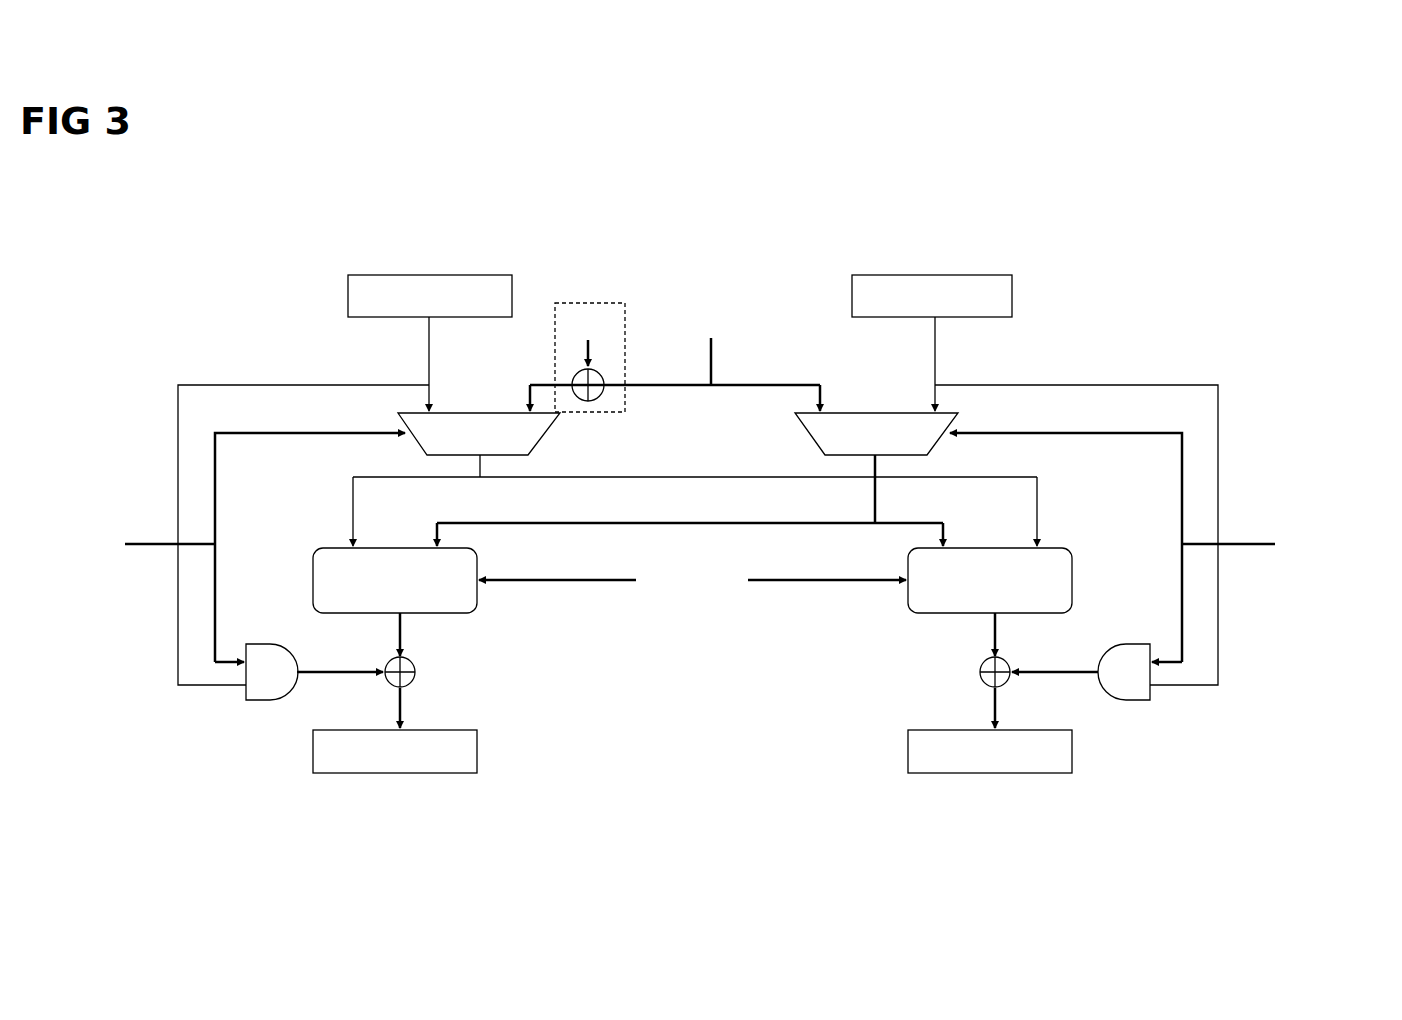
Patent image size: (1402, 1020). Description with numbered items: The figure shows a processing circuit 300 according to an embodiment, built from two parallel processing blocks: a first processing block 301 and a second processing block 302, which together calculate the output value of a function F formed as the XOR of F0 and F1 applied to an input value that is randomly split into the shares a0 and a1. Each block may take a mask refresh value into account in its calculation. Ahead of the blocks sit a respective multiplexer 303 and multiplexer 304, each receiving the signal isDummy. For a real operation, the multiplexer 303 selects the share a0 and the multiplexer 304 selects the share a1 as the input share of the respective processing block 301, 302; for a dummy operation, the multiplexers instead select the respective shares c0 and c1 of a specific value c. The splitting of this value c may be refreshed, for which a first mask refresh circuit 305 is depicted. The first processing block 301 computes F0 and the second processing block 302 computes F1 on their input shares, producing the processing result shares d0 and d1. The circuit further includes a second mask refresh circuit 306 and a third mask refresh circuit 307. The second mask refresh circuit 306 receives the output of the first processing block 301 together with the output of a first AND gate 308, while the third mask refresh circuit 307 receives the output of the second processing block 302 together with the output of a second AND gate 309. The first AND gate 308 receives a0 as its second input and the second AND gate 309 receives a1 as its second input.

The processing circuit 300 is at (1245, 173).
The first processing block 301 is at (318, 550).
The second processing block 302 is at (1062, 550).
The multiplexer 303 is at (547, 433).
The multiplexer 304 is at (807, 430).
The first mask refresh circuit 305 is at (601, 372).
The second mask refresh circuit 306 is at (413, 663).
The third mask refresh circuit 307 is at (982, 663).
The first AND gate 308 is at (268, 702).
The second AND gate 309 is at (1138, 702).